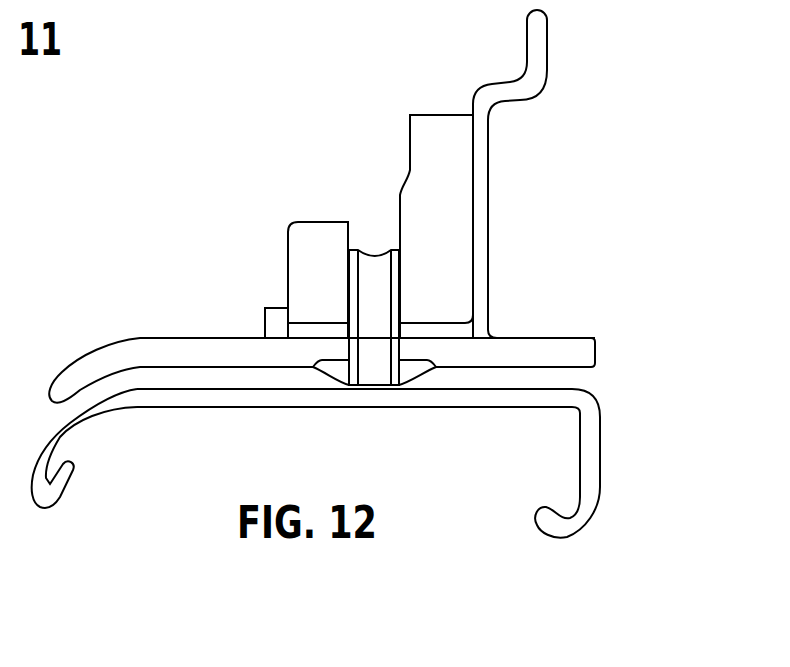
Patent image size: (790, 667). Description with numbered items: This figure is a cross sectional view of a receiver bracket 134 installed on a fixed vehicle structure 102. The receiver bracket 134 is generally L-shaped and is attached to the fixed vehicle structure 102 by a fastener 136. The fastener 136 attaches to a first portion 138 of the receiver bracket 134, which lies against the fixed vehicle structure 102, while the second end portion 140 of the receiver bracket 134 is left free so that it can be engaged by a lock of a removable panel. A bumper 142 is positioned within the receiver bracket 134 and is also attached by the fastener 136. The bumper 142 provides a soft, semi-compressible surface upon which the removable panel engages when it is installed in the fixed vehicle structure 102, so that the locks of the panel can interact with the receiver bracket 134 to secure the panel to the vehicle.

The fixed vehicle structure 102 is at (575, 338).
The receiver bracket 134 is at (483, 90).
The fastener 136 is at (372, 370).
The first portion 138 is at (447, 333).
The second end portion 140 is at (547, 35).
The bumper 142 is at (408, 176).